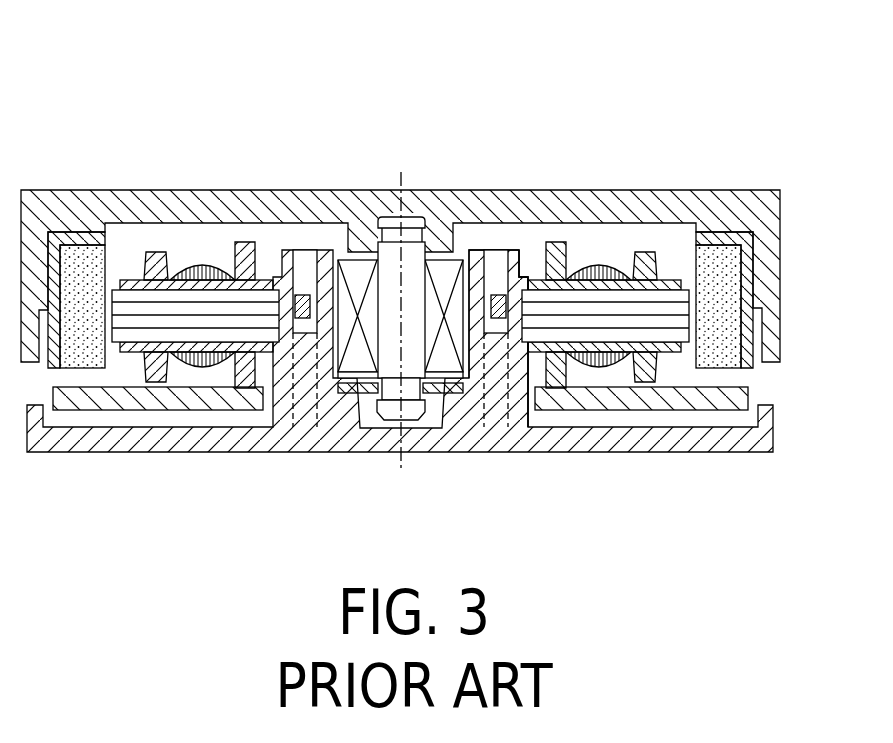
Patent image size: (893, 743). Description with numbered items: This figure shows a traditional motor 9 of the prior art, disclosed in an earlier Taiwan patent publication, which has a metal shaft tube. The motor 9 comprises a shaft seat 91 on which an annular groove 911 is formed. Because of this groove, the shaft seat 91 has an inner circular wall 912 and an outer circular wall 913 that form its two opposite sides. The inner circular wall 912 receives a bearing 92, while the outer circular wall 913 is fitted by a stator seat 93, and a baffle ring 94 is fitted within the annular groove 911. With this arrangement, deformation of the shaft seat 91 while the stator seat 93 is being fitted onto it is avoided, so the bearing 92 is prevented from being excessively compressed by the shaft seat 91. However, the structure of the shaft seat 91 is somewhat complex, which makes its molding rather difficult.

The traditional motor 9 is at (650, 160).
The shaft seat 91 is at (527, 365).
The annular groove 911 is at (495, 255).
The inner circular wall 912 is at (477, 250).
The outer circular wall 913 is at (522, 268).
The bearing 92 is at (442, 272).
The stator seat 93 is at (628, 248).
The baffle ring 94 is at (498, 318).